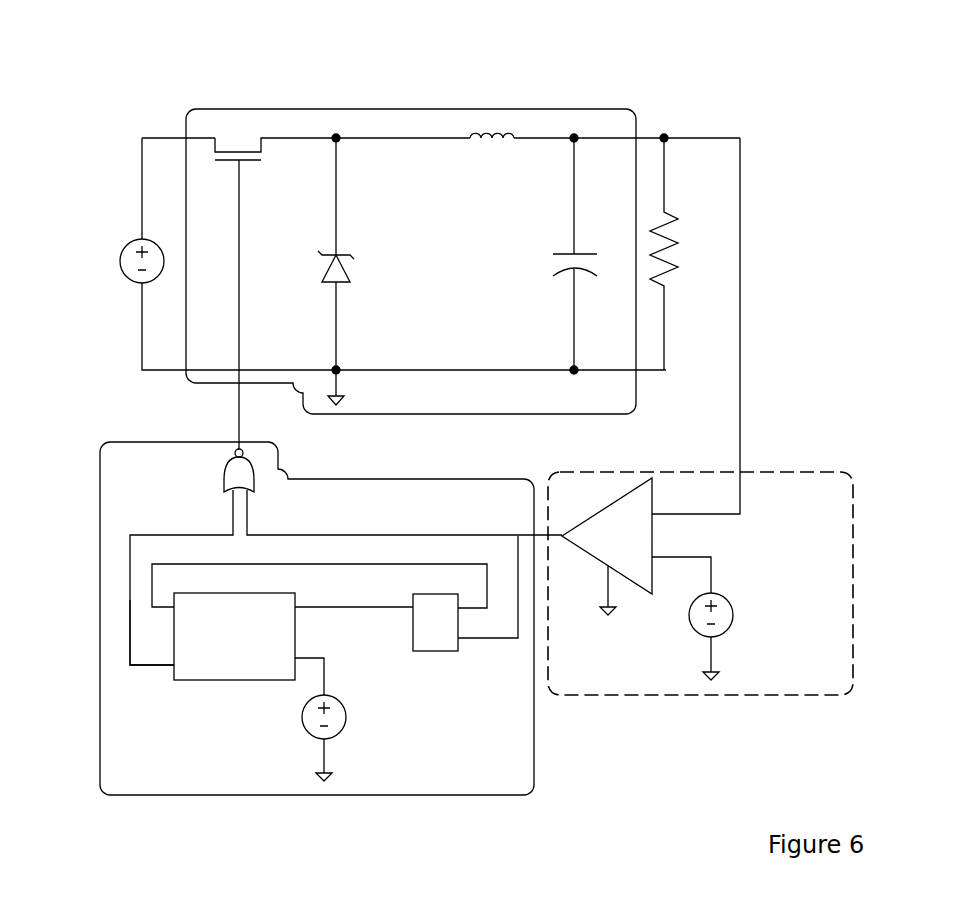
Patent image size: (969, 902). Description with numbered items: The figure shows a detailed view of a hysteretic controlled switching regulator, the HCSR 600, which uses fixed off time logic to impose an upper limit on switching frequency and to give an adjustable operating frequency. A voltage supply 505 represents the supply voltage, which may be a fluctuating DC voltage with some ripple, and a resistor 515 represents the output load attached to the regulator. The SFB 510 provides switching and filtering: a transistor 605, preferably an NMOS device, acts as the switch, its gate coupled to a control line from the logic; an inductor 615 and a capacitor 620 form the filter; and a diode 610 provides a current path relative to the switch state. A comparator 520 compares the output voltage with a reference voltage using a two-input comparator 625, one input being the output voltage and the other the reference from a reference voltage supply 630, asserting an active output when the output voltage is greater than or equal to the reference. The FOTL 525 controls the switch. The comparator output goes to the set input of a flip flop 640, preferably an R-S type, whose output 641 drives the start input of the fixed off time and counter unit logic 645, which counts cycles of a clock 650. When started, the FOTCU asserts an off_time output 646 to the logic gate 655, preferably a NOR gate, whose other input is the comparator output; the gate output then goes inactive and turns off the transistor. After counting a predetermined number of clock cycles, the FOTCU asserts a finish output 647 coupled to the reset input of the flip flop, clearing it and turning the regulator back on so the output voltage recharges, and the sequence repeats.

The HCSR 600 is at (184, 65).
The voltage supply 505 is at (128, 284).
The SFB 510 is at (312, 109).
The resistor 515 is at (670, 214).
The comparator 520 is at (762, 472).
The FOTL 525 is at (446, 479).
The transistor 605 is at (249, 168).
The diode 610 is at (342, 250).
The inductor 615 is at (488, 148).
The capacitor 620 is at (567, 250).
The two-input comparator 625 is at (612, 500).
The reference voltage supply 630 is at (700, 640).
The flip flop 640 is at (432, 653).
The output 641 is at (378, 611).
The fixed off time and counter unit logic 645 is at (234, 682).
The off_time output 646 is at (160, 667).
The finish output 647 is at (274, 566).
The clock 650 is at (314, 740).
The logic gate 655 is at (226, 468).